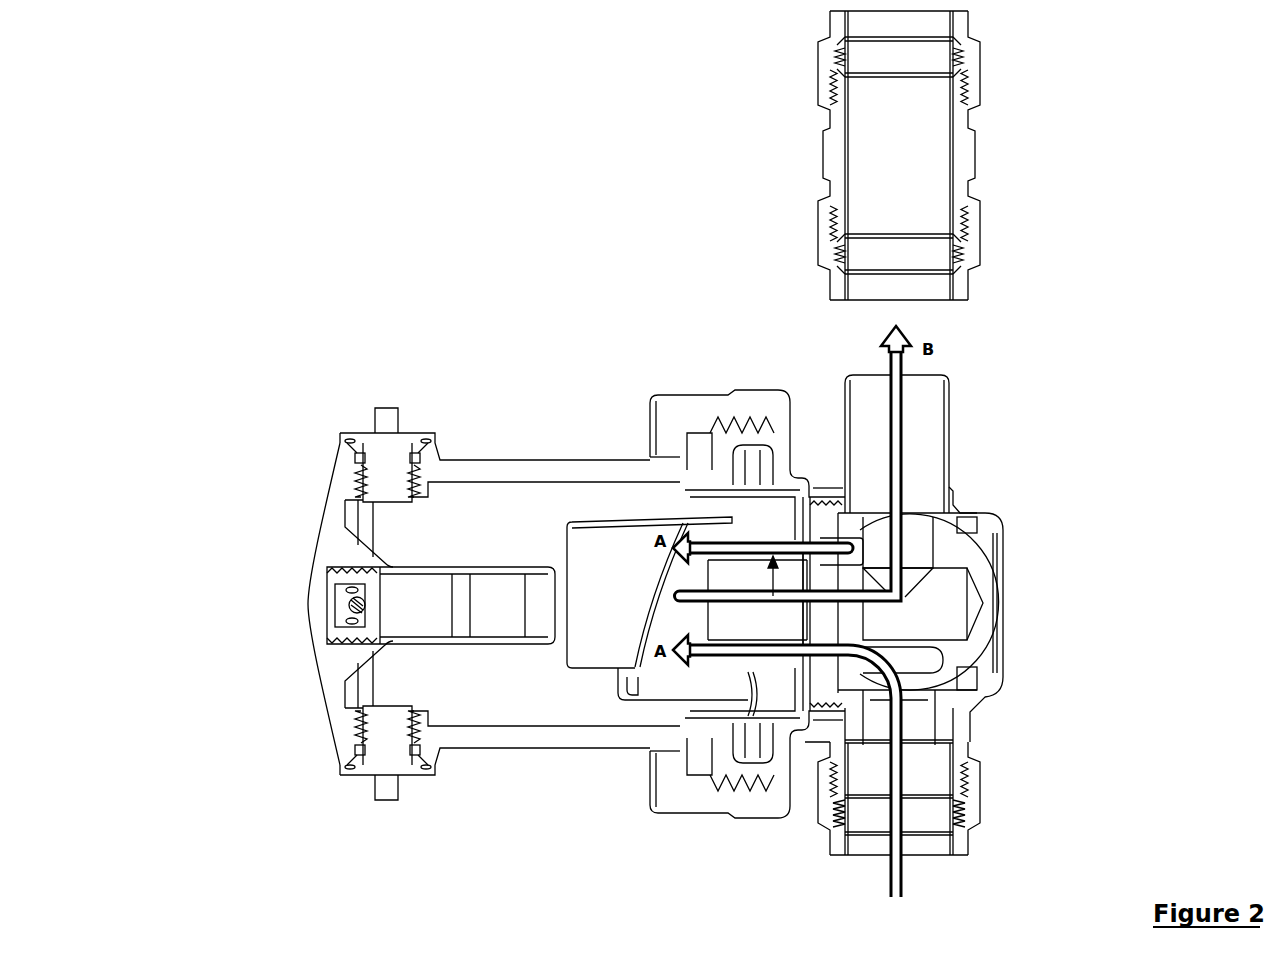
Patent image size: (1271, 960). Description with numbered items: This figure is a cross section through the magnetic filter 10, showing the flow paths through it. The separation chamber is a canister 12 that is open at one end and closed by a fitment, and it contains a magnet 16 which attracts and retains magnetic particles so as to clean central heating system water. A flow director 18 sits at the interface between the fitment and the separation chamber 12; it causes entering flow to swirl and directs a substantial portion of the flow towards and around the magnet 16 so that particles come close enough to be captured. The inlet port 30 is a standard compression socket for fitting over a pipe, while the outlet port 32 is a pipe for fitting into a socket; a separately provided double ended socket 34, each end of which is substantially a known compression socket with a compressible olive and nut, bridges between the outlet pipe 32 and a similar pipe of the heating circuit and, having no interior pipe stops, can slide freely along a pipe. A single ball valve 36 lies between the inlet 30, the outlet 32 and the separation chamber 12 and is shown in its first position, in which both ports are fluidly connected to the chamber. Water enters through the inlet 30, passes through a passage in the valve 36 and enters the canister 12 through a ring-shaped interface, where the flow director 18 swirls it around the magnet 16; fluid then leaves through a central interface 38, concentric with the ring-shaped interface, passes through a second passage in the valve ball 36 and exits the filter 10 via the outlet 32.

The magnetic filter 10 is at (165, 158).
The canister 12 is at (477, 465).
The magnet 16 is at (437, 633).
The flow director 18 is at (591, 519).
The inlet port 30 is at (945, 784).
The outlet port 32 is at (950, 453).
The double ended socket 34 is at (921, 157).
The ball valve 36 is at (950, 548).
The central interface 38 is at (783, 598).